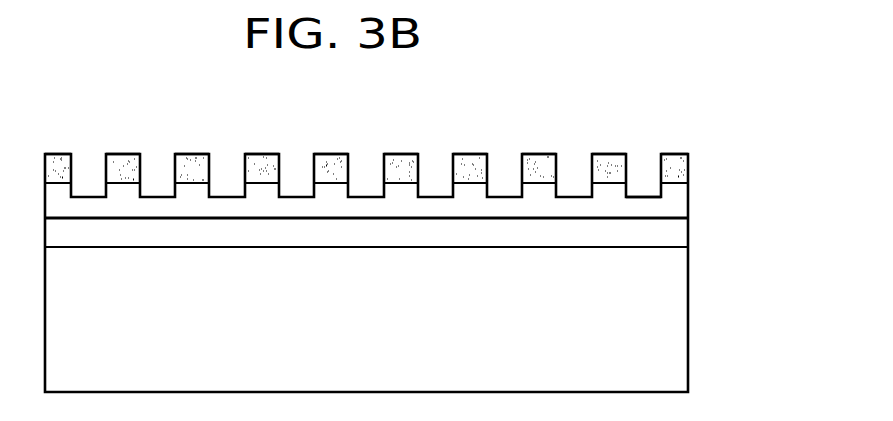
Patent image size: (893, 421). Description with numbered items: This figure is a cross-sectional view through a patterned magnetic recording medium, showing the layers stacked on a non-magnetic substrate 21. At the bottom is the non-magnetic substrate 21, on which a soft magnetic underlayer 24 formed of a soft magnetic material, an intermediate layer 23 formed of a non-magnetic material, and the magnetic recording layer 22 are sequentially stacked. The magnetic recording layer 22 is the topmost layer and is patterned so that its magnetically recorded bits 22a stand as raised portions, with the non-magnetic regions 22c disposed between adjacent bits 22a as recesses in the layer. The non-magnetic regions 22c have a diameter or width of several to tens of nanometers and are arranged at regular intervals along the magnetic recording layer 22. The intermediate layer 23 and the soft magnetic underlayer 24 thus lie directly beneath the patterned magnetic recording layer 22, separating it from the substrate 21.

The non-magnetic substrate 21 is at (680, 323).
The magnetic recording layer 22 is at (419, 175).
The bits 22a is at (682, 173).
The non-magnetic regions 22c is at (643, 162).
The intermediate layer 23 is at (682, 202).
The soft magnetic underlayer 24 is at (682, 233).